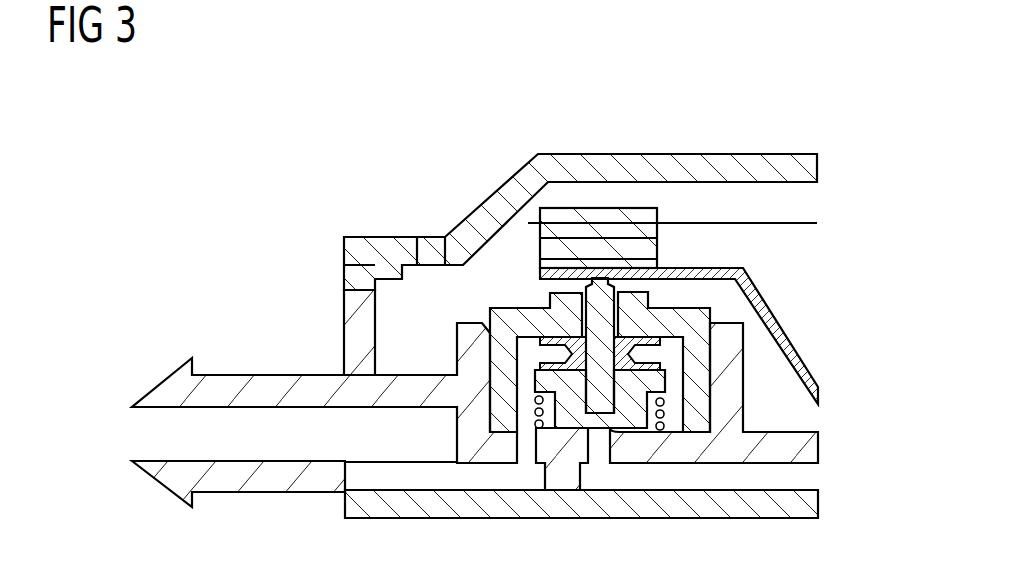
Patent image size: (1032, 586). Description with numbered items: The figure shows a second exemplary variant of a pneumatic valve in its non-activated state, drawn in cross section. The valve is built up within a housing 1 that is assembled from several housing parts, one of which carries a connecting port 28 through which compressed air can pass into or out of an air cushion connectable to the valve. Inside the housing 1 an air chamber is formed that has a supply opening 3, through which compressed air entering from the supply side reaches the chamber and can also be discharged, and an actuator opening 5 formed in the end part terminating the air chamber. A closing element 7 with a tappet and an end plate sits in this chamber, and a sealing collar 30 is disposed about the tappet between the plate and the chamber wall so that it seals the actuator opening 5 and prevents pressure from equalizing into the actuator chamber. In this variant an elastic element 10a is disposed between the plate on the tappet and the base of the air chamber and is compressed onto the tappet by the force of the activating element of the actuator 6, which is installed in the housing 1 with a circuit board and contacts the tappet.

The housing 1 is at (836, 72).
The supply opening 3 is at (601, 452).
The actuator opening 5 is at (582, 310).
The actuator 6 is at (834, 304).
The closing element 7 is at (600, 315).
The elastic element 10a is at (667, 415).
The connecting port 28 is at (158, 432).
The sealing collar 30 is at (552, 364).